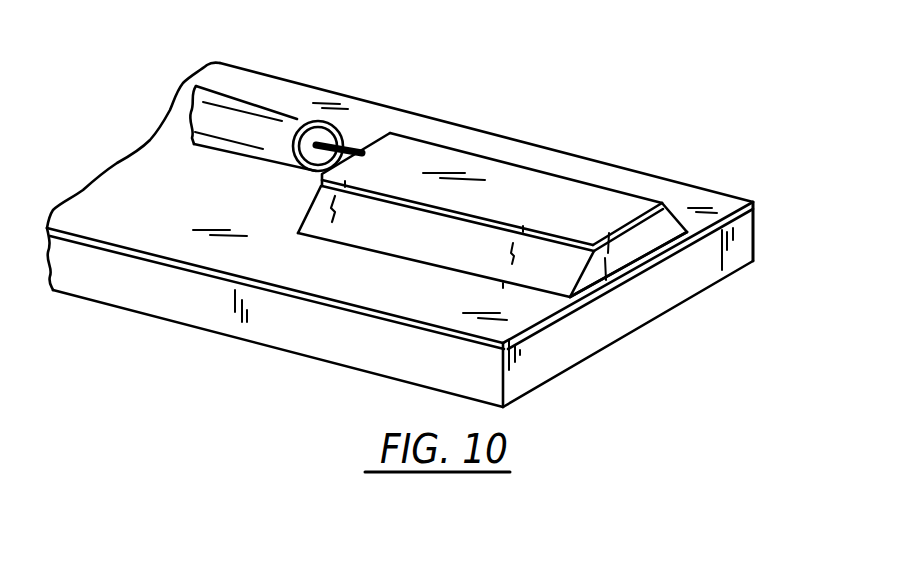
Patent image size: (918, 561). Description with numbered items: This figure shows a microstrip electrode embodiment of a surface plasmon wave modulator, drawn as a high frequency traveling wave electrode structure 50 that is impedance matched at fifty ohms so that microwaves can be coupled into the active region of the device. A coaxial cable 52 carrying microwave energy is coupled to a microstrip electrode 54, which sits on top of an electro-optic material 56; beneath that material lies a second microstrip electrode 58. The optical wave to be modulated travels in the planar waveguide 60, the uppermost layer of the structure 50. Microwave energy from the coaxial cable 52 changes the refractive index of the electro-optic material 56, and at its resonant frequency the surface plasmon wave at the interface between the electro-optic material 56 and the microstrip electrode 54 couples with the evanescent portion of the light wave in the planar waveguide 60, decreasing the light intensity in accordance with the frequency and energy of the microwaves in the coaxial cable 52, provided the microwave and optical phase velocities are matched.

The electrode structure 50 is at (580, 137).
The coaxial cable 52 is at (270, 115).
The microstrip electrode 54 is at (427, 137).
The electro-optic material 56 is at (330, 211).
The second microstrip electrode 58 is at (583, 294).
The planar waveguide 60 is at (754, 203).